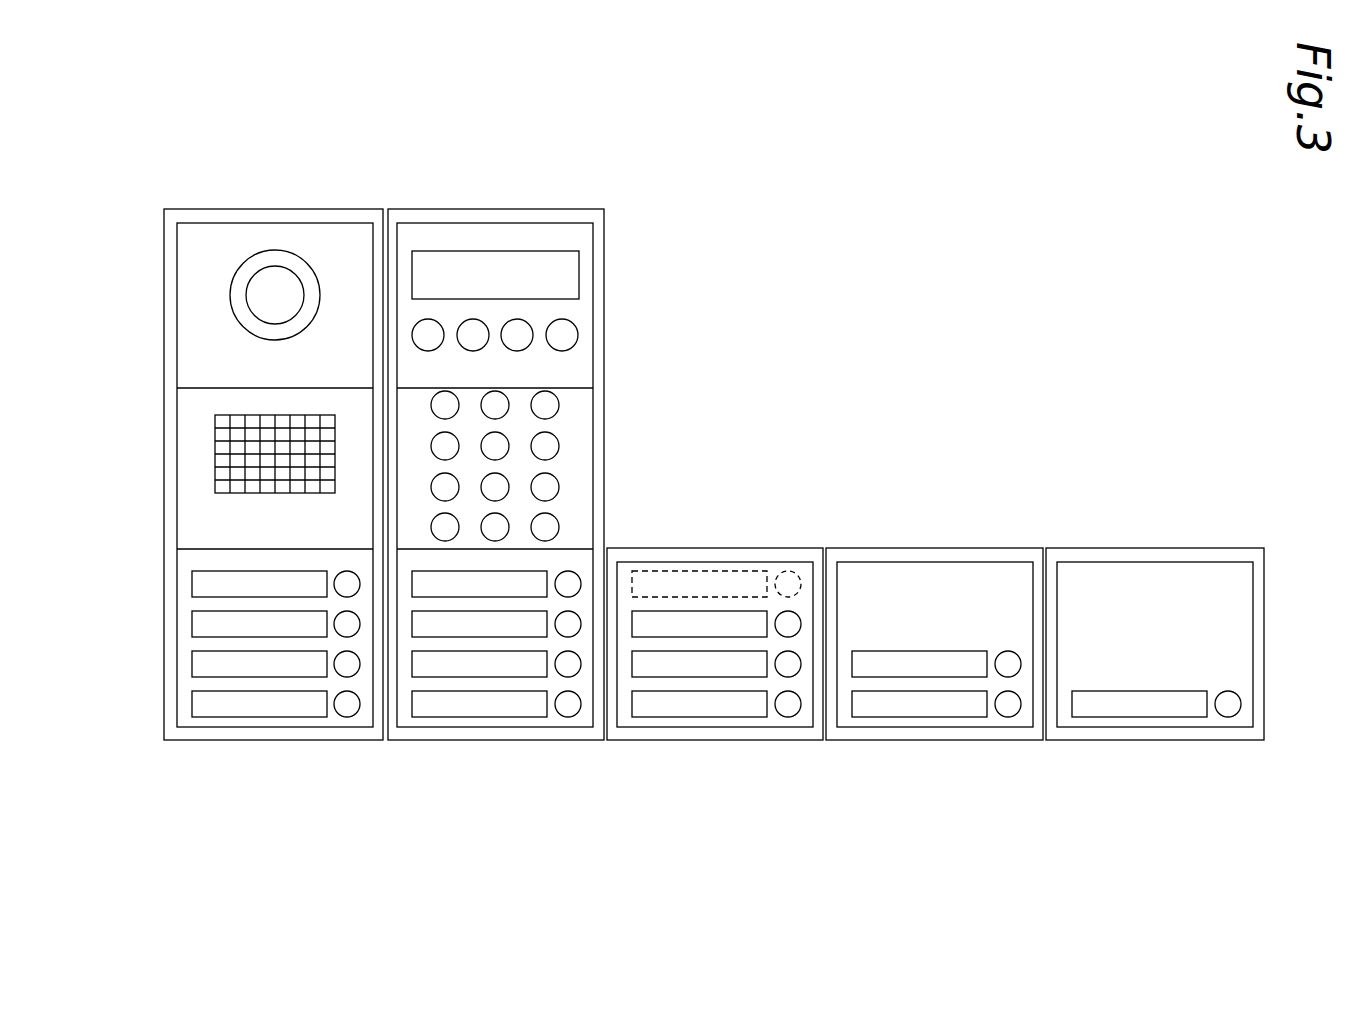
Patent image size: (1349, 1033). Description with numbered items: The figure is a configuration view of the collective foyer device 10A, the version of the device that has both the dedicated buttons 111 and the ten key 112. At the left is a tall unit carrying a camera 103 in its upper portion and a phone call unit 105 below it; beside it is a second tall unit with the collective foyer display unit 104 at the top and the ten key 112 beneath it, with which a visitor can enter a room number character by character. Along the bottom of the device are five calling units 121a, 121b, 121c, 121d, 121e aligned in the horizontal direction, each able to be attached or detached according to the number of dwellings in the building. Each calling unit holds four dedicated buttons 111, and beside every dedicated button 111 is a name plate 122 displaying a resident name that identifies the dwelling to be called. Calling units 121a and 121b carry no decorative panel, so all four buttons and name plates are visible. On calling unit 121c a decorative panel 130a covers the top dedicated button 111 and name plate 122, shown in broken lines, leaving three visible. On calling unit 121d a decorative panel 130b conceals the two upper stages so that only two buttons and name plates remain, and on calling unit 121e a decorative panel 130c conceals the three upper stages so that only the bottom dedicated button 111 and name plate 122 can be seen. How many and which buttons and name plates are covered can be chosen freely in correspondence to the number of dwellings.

The collective foyer device 10A is at (618, 152).
The camera 103 is at (258, 294).
The collective foyer display unit 104 is at (579, 275).
The phone call unit 105 is at (215, 449).
The dedicated button 111 is at (355, 596).
The ten key 112 is at (614, 392).
The calling unit 121a is at (258, 740).
The calling unit 121b is at (478, 740).
The calling unit 121c is at (700, 740).
The calling unit 121d is at (920, 740).
The calling unit 121e is at (1140, 740).
The name plate 122 is at (204, 588).
The decorative panel 130a is at (748, 576).
The decorative panel 130b is at (933, 562).
The decorative panel 130c is at (1155, 562).